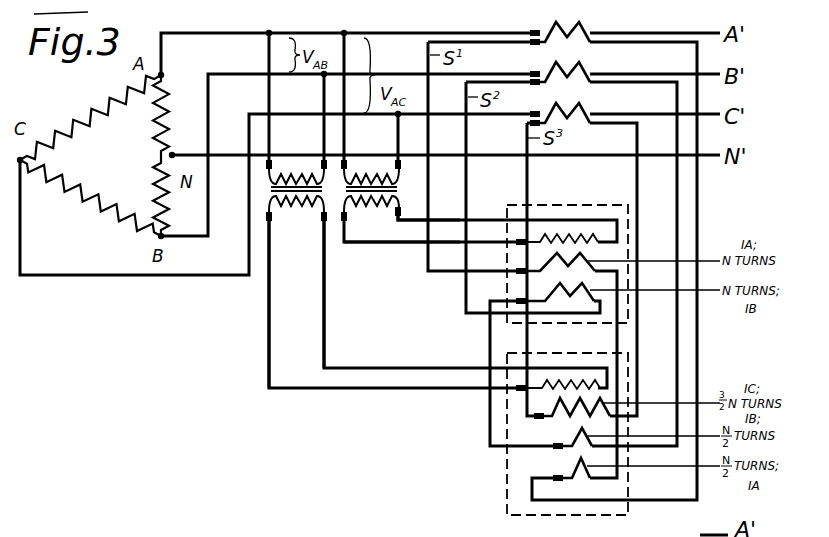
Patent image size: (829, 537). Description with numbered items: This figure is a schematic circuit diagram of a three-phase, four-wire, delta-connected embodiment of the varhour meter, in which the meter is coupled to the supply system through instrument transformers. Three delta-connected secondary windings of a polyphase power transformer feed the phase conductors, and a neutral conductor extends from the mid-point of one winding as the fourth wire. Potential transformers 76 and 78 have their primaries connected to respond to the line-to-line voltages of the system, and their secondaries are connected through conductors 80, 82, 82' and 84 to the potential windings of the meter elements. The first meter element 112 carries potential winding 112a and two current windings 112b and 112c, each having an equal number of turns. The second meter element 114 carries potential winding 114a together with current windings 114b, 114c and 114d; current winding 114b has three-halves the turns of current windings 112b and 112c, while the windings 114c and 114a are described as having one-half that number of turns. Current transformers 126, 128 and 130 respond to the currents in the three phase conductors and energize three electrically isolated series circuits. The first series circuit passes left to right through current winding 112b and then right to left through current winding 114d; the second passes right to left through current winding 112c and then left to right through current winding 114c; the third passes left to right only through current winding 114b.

The potential transformer 76 is at (371, 206).
The potential transformer 78 is at (296, 206).
The conductor 80 is at (416, 216).
The conductor 82 is at (402, 259).
The conductor 82' is at (347, 292).
The conductor 84 is at (268, 318).
The first meter element 112 is at (512, 205).
The potential winding 112a is at (583, 237).
The current winding 112b is at (535, 268).
The current winding 112c is at (540, 299).
The second meter element 114 is at (507, 353).
The potential winding 114a is at (569, 383).
The current winding 114b is at (545, 408).
The current winding 114c is at (560, 438).
The current winding 114d is at (563, 468).
The current transformer 126 is at (570, 32).
The current transformer 128 is at (570, 72).
The current transformer 130 is at (575, 113).